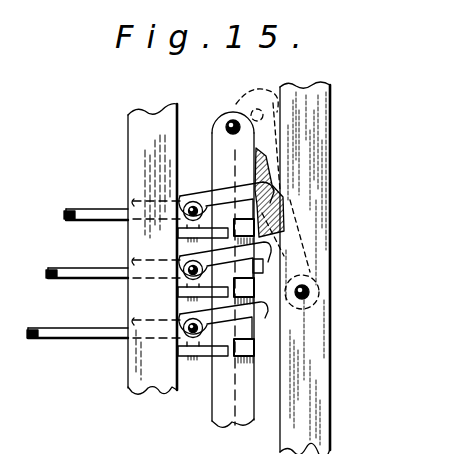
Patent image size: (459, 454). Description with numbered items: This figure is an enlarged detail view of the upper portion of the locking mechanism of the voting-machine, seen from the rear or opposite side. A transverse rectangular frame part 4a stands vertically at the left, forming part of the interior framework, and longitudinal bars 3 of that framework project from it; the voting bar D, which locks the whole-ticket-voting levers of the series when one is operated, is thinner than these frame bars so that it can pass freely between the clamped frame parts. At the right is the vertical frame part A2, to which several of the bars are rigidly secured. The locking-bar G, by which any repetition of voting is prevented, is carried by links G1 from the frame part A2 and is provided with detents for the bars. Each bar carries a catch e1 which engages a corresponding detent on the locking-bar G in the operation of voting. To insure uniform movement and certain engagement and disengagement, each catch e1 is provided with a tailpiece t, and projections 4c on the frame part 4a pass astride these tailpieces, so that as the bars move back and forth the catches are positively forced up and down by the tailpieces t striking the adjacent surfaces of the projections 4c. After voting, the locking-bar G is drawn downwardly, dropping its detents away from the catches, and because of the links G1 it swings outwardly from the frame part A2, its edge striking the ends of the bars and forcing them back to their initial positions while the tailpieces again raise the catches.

The transverse rectangular frame part 4a is at (152, 406).
The longitudinal bar 3 is at (100, 209).
The voting-bar D is at (63, 215).
The locking-bar G is at (213, 153).
The link G1 is at (180, 196).
The catch e1 is at (336, 331).
The projection 4c is at (203, 360).
The tailpiece t is at (186, 239).
The vertical frame part A2 is at (338, 372).